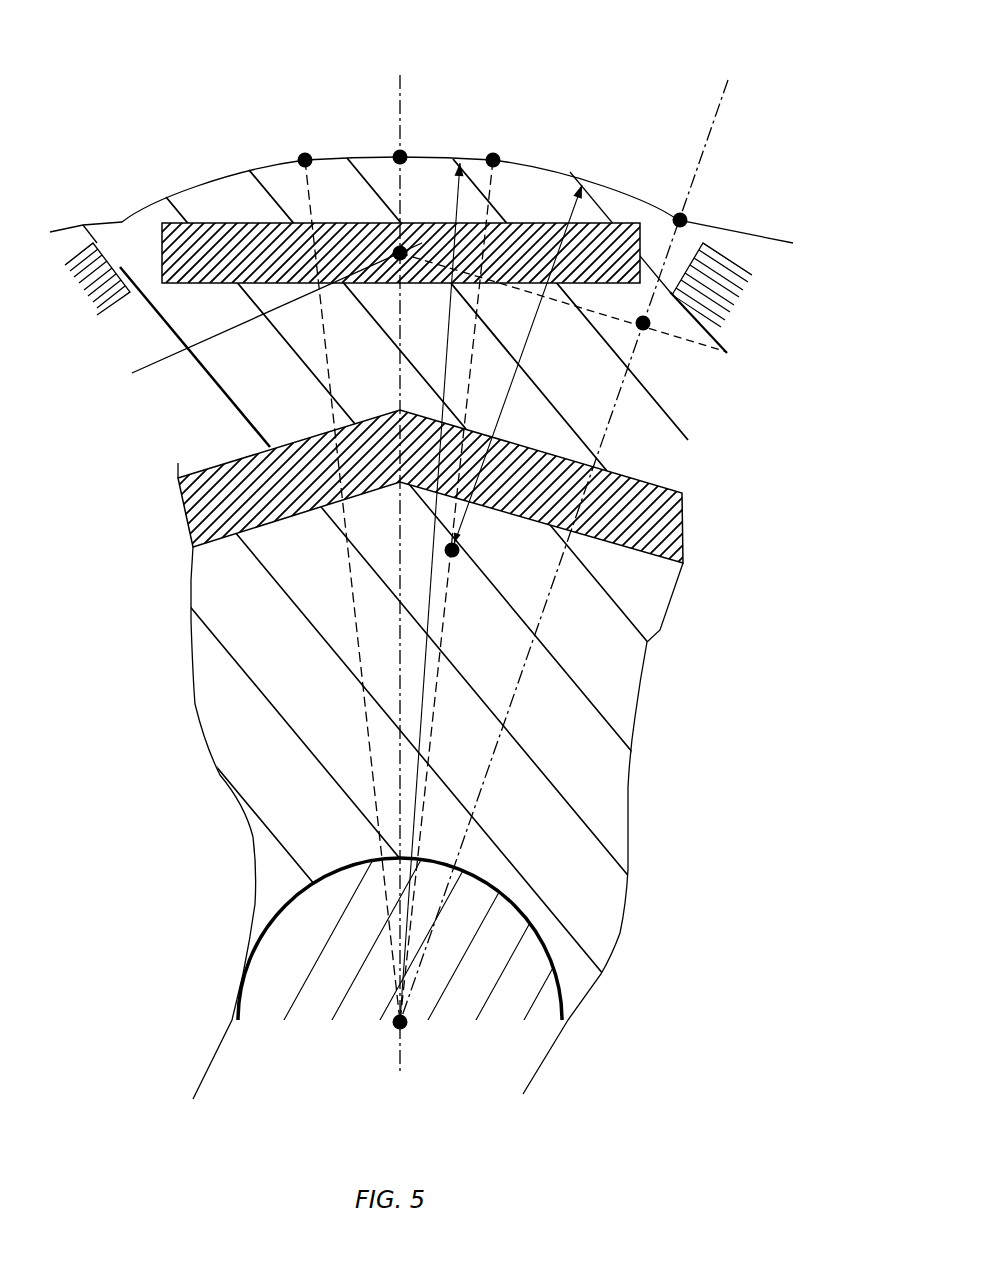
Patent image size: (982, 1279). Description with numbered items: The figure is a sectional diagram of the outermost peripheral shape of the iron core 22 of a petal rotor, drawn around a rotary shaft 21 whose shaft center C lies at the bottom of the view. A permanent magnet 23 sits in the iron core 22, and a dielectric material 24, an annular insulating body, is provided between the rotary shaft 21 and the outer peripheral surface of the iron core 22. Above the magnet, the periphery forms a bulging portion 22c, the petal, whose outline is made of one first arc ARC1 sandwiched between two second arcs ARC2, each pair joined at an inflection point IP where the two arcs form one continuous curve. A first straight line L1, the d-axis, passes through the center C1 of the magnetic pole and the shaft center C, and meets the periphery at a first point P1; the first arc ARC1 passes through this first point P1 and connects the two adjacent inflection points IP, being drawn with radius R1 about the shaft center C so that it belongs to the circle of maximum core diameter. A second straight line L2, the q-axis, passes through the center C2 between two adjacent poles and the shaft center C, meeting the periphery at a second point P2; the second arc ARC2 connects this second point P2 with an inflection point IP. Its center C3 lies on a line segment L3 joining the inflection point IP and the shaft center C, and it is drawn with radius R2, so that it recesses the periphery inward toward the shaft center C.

The rotary shaft 21 is at (359, 999).
The iron core 22 is at (660, 422).
The bulging portion 22c is at (522, 212).
The permanent magnet 23 is at (160, 213).
The dielectric material 24 is at (690, 565).
The first straight line L1 is at (399, 557).
The second straight line L2 is at (567, 531).
The line segment L3 is at (452, 591).
The radius of first arc R1 is at (432, 592).
The radius of second arc R2 is at (517, 367).
The first point P1 is at (258, 318).
The second point P2 is at (682, 220).
The shaft center C is at (421, 1040).
The center of magnetic pole C1 is at (400, 157).
The center between magnetic poles C2 is at (656, 342).
The center of second arc C3 is at (475, 542).
The first arc ARC1 is at (433, 143).
The second arc ARC2 is at (397, 574).
The inflection point IP is at (303, 155).